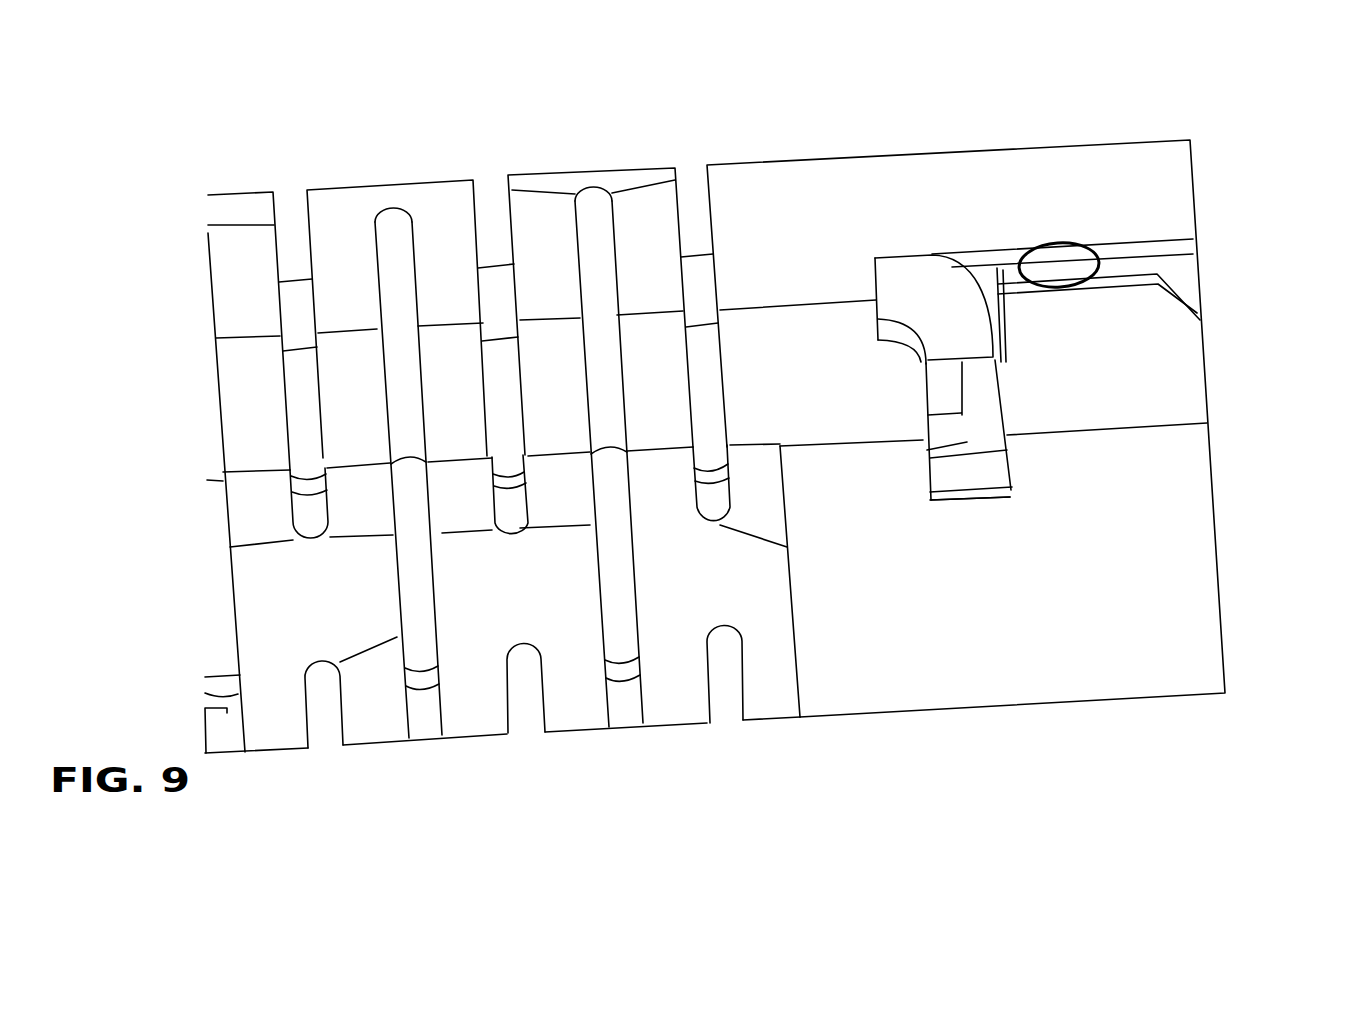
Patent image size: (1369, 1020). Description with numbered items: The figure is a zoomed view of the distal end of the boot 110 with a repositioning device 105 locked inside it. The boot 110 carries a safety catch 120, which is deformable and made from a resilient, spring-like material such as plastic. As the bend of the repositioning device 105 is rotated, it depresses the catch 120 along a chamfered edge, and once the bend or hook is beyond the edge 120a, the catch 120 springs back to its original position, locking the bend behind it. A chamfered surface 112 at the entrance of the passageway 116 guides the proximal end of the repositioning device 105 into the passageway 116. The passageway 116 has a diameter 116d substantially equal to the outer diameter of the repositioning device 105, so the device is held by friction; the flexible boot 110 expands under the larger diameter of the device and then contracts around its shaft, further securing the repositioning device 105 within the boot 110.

The boot 110 is at (743, 436).
The repositioning device 105 is at (928, 322).
The diameter 116d is at (1088, 250).
The passageway 116 is at (1142, 182).
The chamfered surface 112 is at (1172, 290).
The safety catch 120 is at (1065, 579).
The edge 120a is at (975, 405).